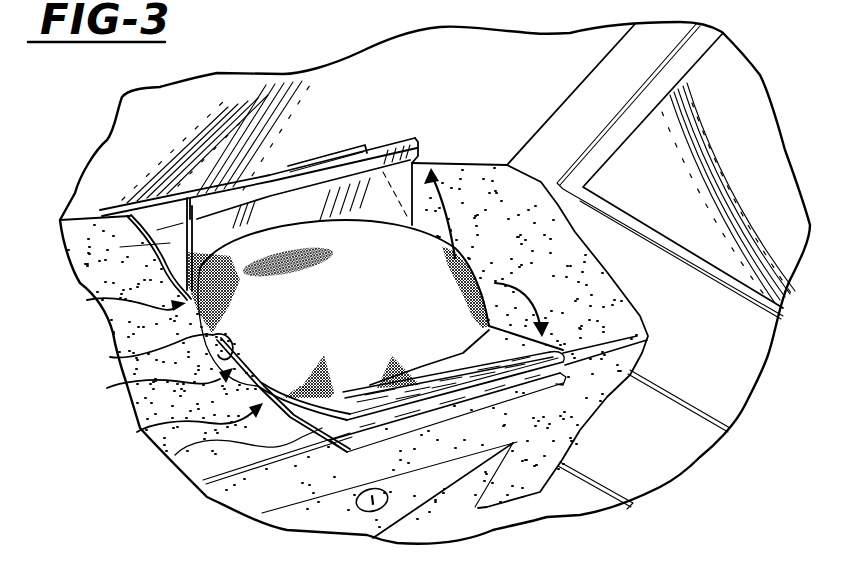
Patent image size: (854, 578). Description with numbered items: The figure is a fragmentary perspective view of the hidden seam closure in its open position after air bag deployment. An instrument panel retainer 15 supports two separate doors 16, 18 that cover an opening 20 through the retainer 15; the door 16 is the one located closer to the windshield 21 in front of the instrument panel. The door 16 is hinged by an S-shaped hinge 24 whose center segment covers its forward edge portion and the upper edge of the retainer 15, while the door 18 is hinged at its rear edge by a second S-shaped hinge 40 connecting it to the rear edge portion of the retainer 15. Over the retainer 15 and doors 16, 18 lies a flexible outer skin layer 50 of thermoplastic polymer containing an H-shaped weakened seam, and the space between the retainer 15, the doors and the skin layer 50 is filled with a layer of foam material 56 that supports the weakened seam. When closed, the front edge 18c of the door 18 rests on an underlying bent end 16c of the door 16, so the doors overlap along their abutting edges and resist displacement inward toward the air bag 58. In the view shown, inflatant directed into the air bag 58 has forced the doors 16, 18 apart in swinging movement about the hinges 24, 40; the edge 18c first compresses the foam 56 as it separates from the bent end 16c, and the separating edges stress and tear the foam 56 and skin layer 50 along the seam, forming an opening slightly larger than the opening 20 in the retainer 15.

The windshield 21 is at (430, 87).
The door 16 is at (152, 251).
The bent end 16c is at (306, 164).
The air bag 58 is at (455, 248).
The door 18 is at (644, 338).
The layer of foam material 56 is at (566, 375).
The S-shaped hinge 24 is at (115, 312).
The opening 20 is at (213, 393).
The instrument panel retainer 15 is at (107, 388).
The S-shaped hinge 40 is at (178, 430).
The skin layer 50 is at (188, 450).
The front edge 18c is at (473, 383).